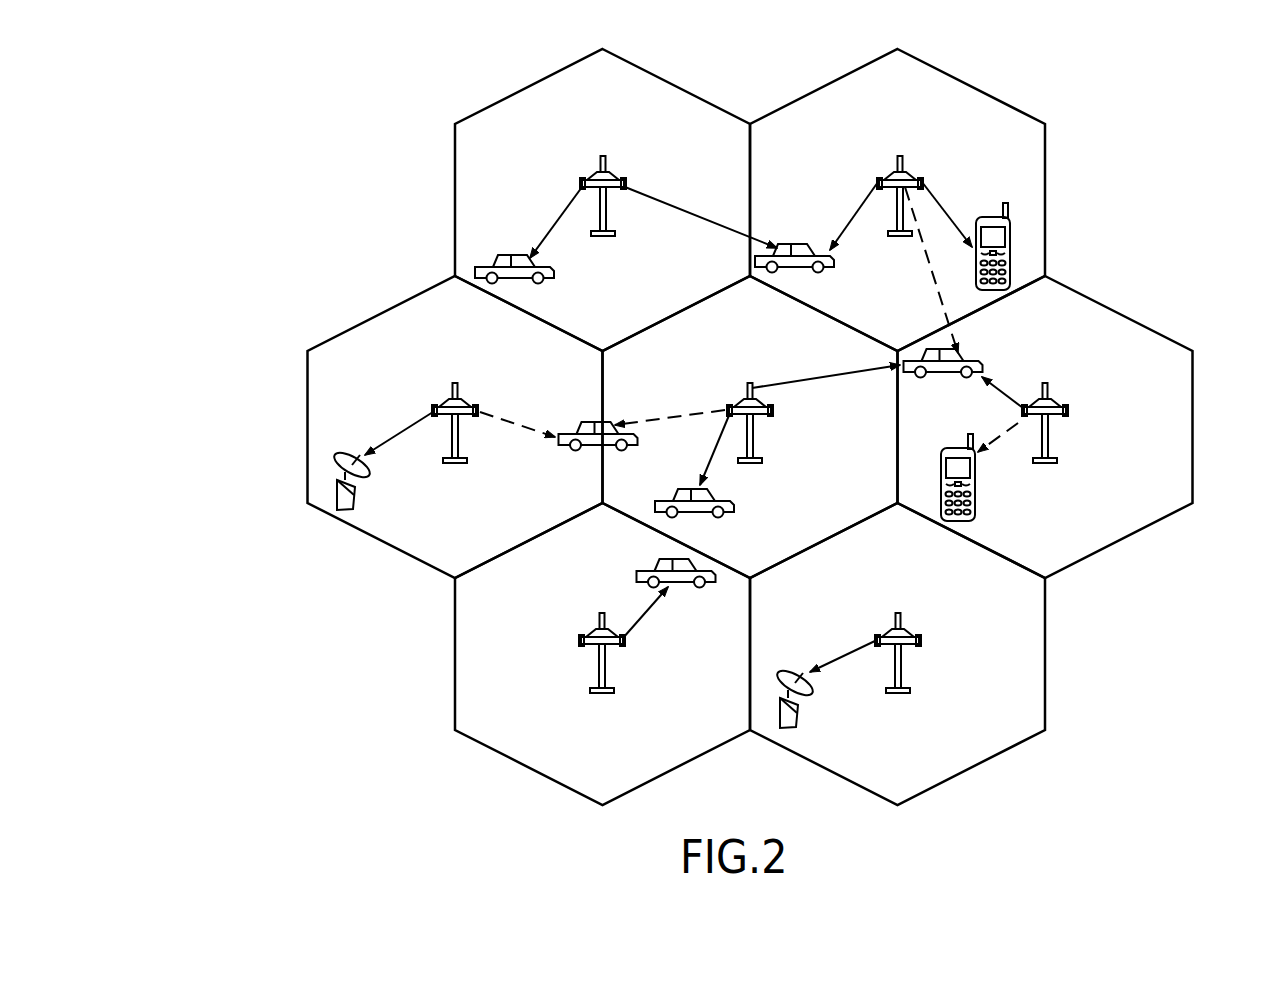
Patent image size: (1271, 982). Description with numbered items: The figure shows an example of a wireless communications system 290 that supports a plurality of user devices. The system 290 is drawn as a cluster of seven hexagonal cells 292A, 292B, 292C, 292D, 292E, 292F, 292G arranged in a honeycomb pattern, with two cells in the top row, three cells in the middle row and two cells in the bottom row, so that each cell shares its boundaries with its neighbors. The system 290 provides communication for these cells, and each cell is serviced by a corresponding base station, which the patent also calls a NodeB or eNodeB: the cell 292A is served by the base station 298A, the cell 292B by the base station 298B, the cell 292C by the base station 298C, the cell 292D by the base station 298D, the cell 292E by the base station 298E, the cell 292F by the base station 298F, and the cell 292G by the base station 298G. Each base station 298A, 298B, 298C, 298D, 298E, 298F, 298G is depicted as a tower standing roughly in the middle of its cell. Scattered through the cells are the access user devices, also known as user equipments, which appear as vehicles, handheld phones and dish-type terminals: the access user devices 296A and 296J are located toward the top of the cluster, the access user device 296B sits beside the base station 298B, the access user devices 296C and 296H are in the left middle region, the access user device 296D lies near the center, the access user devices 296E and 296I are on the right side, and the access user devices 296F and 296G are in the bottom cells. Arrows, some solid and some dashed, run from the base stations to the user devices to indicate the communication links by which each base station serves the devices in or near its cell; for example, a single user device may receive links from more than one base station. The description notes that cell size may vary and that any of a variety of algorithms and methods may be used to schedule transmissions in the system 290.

The wireless communications system 290 is at (244, 134).
The cell 292A is at (627, 91).
The cell 292B is at (923, 91).
The cell 292C is at (479, 330).
The cell 292D is at (772, 330).
The cell 292E is at (1071, 330).
The cell 292F is at (626, 549).
The cell 292G is at (923, 549).
The base station 298A is at (603, 156).
The base station 298B is at (900, 156).
The base station 298C is at (455, 383).
The base station 298D is at (750, 383).
The base station 298E is at (1045, 383).
The base station 298F is at (602, 613).
The base station 298G is at (898, 613).
The access user device 296A is at (548, 278).
The access user device 296B is at (990, 216).
The access user device 296C is at (355, 500).
The access user device 296D is at (730, 510).
The access user device 296E is at (940, 375).
The access user device 296F is at (708, 586).
The access user device 296G is at (798, 718).
The access user device 296H is at (565, 450).
The access user device 296I is at (977, 505).
The access user device 296J is at (798, 244).